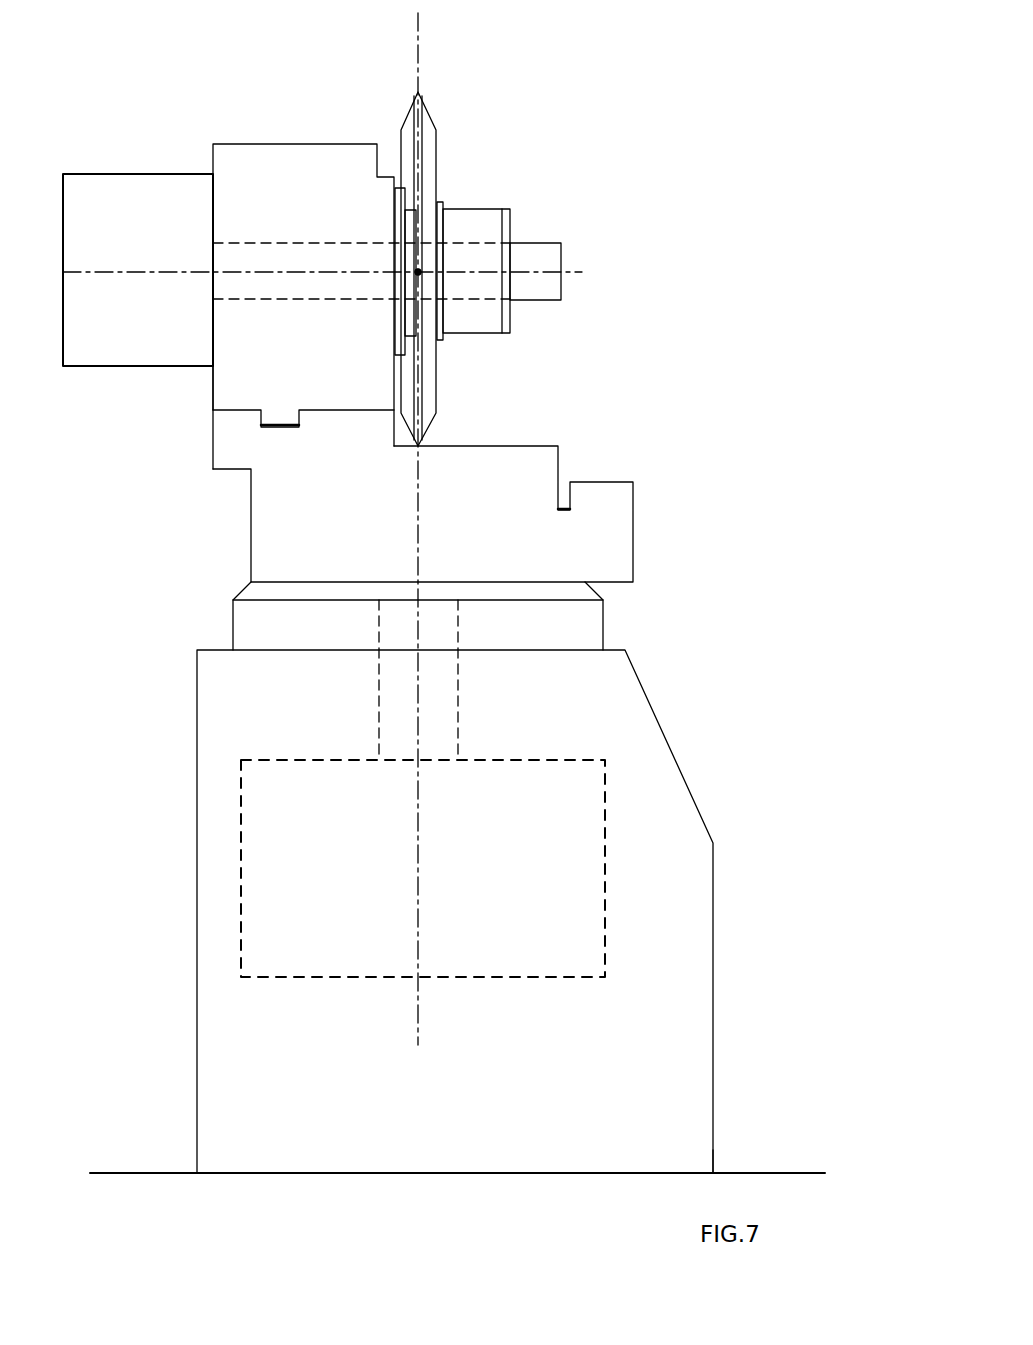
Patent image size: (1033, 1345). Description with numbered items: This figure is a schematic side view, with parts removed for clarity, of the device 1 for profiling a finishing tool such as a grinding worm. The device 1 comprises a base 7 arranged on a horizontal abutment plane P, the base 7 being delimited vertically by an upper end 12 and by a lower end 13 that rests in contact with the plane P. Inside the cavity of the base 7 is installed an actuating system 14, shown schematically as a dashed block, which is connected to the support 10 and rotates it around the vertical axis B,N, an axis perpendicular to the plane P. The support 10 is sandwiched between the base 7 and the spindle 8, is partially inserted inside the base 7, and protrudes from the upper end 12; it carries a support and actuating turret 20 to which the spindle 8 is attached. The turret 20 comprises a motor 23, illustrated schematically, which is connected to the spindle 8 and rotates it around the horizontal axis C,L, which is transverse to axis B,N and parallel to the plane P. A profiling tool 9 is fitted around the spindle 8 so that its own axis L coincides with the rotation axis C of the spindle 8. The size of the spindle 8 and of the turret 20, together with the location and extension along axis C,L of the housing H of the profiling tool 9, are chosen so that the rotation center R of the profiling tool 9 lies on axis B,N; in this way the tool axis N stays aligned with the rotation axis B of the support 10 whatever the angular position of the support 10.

The device for profiling a finishing tool 1 is at (667, 290).
The base 7 is at (207, 827).
The spindle 8 is at (312, 252).
The profiling tool 9 is at (428, 150).
The support 10 is at (221, 502).
The upper end 12 is at (610, 588).
The lower end 13 is at (717, 1168).
The actuating system 14 is at (580, 877).
The support and actuating turret 20 is at (230, 387).
The motor 23 is at (126, 184).
The rotation axis B and tool axis N B,N is at (418, 60).
The rotation axis C and tool axis L C,L is at (570, 267).
The housing H is at (429, 208).
The rotation center R is at (418, 272).
The abutment plane P is at (753, 1170).